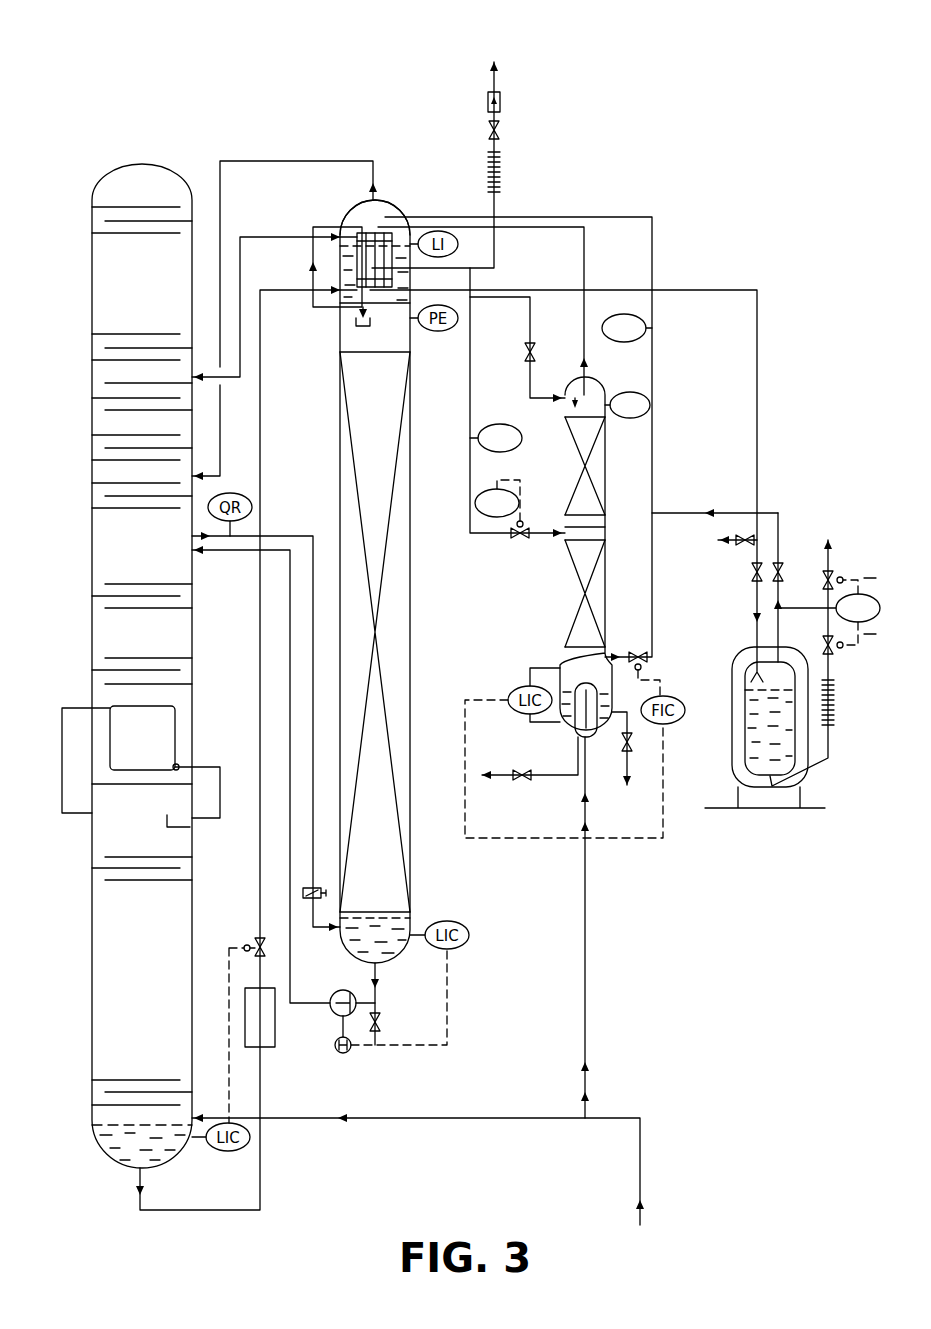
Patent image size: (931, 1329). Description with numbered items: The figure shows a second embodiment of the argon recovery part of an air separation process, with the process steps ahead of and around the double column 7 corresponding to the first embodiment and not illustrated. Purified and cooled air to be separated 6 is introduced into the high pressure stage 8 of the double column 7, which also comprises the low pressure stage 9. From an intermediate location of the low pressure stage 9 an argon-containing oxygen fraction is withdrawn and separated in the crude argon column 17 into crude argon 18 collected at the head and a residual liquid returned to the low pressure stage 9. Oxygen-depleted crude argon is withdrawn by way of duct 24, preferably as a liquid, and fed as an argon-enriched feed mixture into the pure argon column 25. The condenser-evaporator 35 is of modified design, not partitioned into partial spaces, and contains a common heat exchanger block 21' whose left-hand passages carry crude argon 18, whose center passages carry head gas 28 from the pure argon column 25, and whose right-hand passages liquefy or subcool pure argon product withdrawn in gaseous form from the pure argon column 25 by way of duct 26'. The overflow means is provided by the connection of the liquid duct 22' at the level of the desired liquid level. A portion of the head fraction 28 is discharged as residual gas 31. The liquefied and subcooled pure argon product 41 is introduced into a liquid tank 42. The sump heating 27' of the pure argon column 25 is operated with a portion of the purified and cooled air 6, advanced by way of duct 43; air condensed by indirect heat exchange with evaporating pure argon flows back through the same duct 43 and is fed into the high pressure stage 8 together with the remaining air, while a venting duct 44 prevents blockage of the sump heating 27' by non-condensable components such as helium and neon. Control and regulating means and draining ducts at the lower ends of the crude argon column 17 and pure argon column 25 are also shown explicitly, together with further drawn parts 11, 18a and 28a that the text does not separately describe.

The duct 6 is at (642, 1178).
The double column 7 is at (90, 568).
The high pressure stage 8 is at (142, 872).
The low pressure stage 9 is at (142, 357).
The bottoms circulation line 11 is at (262, 515).
The crude argon column 17 is at (332, 463).
The crude argon 18 is at (313, 258).
The heat exchanger outlet 18a is at (356, 322).
The common heat exchanger block 21' is at (355, 229).
The liquid duct 22' is at (274, 282).
The duct 24 is at (470, 400).
The pure argon column 25 is at (549, 605).
The duct 26' is at (581, 456).
The sump heating 27' is at (556, 719).
The head fraction 28 is at (583, 258).
The control valve 28a is at (527, 335).
The residual gas 31 is at (497, 80).
The condenser-evaporator 35 is at (398, 198).
The liquefied and subcooled pure argon product 41 is at (760, 352).
The liquid tank 42 is at (740, 647).
The duct 43 is at (588, 945).
The venting duct 44 is at (552, 778).